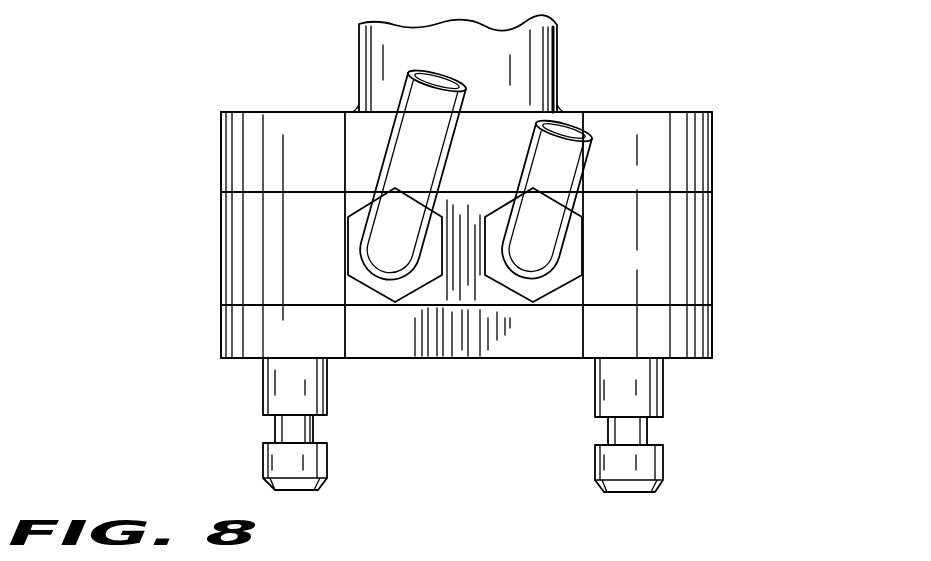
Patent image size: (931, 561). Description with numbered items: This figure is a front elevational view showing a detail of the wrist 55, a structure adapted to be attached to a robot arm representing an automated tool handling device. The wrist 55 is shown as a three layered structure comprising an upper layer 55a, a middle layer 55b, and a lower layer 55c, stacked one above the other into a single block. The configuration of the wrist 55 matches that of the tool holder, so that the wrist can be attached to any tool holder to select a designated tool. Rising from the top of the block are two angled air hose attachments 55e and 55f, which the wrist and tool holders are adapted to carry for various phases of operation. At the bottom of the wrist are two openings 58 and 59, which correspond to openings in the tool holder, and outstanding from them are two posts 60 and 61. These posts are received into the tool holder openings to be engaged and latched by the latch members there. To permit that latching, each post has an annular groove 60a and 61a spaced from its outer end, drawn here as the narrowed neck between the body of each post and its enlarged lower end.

The wrist 55 is at (546, 186).
The layer 55a is at (712, 160).
The layer 55b is at (712, 278).
The layer 55c is at (712, 335).
The air hose attachment 55e is at (420, 108).
The air hose attachment 55f is at (582, 130).
The opening 58 is at (262, 360).
The opening 59 is at (668, 363).
The post 60 is at (327, 463).
The annular groove 60a is at (318, 430).
The post 61 is at (665, 468).
The annular groove 61a is at (652, 435).